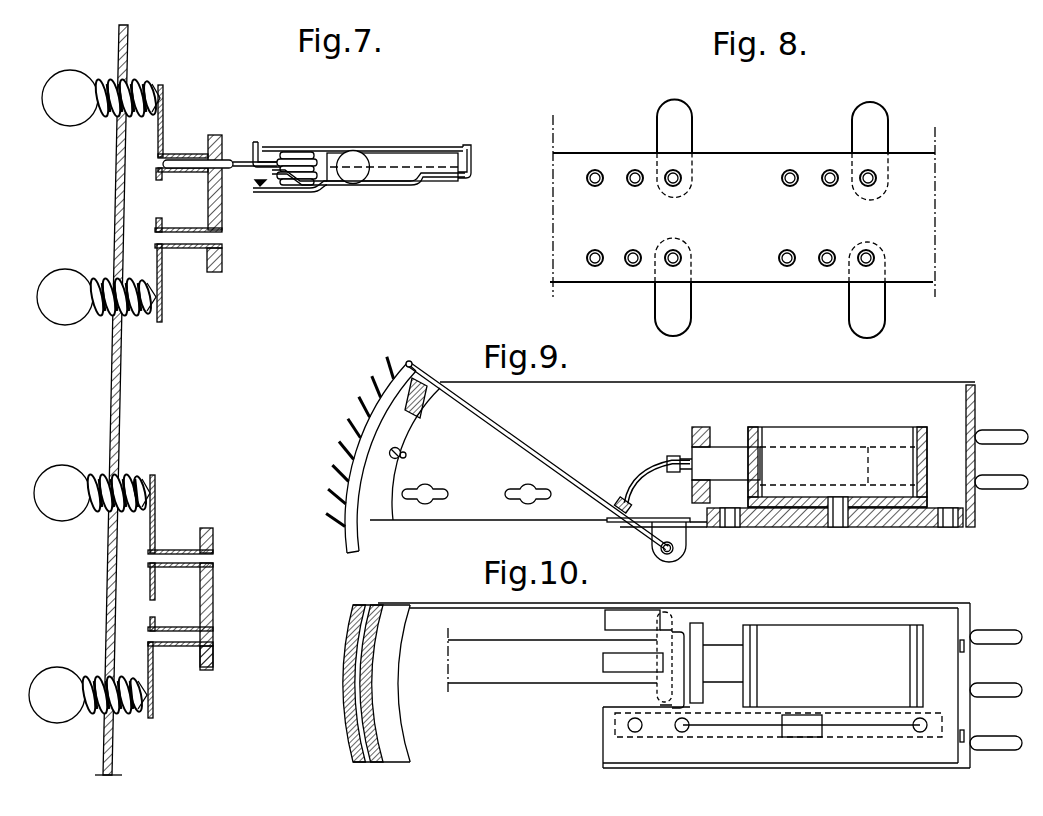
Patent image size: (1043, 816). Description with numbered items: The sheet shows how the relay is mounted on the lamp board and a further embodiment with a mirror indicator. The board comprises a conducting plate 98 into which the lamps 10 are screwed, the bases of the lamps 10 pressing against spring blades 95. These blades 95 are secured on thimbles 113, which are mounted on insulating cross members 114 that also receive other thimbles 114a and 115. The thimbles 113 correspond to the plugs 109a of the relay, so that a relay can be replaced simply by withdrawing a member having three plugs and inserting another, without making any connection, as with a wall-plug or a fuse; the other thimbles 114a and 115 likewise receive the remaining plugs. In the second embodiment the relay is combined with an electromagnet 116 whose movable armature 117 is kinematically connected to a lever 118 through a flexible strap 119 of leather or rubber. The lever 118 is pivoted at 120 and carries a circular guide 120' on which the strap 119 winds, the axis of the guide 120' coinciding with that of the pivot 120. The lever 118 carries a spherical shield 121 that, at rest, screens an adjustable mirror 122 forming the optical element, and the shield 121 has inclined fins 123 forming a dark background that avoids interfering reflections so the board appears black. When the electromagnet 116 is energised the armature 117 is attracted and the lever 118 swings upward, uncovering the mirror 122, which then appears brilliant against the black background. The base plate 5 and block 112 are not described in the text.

In FIG. 7, the lamp 10 is at (60, 112).
In FIG. 7, the spring blade 95 is at (164, 118).
In FIG. 8, the spring blade 95 is at (686, 128).
In FIG. 7, the conducting plate 98 is at (118, 415).
In FIG. 7, the plug 109a is at (200, 150).
In FIG. 7, the thimble 113 is at (193, 172).
In FIG. 8, the thimble 113 is at (682, 178).
In FIG. 7, the insulating cross member 114 is at (222, 212).
In FIG. 8, the insulating cross member 114 is at (755, 153).
In FIG. 8, the thimble 114a is at (634, 266).
In FIG. 8, the thimble 115 is at (596, 266).
In FIG. 9, the electromagnet 116 is at (846, 427).
In FIG. 10, the electromagnet 116 is at (808, 625).
In FIG. 9, the movable armature 117 is at (732, 445).
In FIG. 10, the movable armature 117 is at (718, 656).
In FIG. 9, the lever 118 is at (547, 460).
In FIG. 10, the lever 118 is at (495, 684).
In FIG. 9, the flexible strap 119 is at (648, 467).
In FIG. 10, the flexible strap 119 is at (603, 660).
In FIG. 9, the pivot 120 is at (691, 542).
In FIG. 10, the pivot 120 is at (686, 647).
In FIG. 9, the circular guide 120' is at (647, 495).
In FIG. 9, the spherical shield 121 is at (372, 410).
In FIG. 10, the spherical shield 121 is at (353, 700).
In FIG. 9, the mirror 122 is at (388, 455).
In FIG. 10, the mirror 122 is at (370, 666).
In FIG. 9, the inclined fin 123 is at (337, 500).
In FIG. 10, the base plate 5 is at (740, 738).
In FIG. 10, the block 112 is at (808, 738).